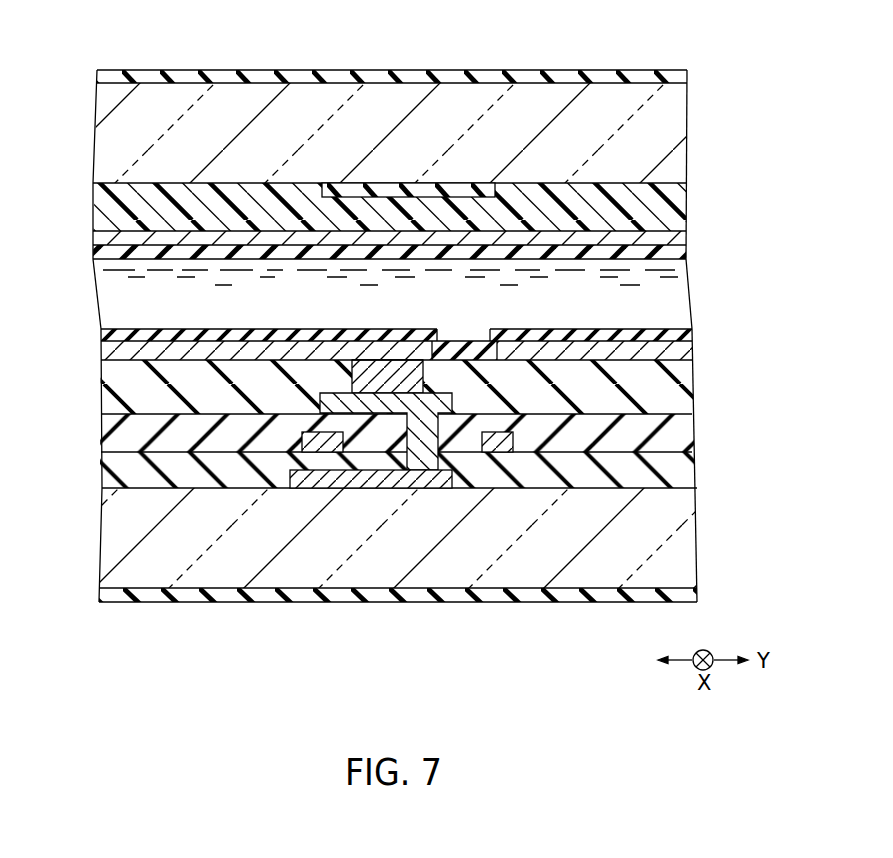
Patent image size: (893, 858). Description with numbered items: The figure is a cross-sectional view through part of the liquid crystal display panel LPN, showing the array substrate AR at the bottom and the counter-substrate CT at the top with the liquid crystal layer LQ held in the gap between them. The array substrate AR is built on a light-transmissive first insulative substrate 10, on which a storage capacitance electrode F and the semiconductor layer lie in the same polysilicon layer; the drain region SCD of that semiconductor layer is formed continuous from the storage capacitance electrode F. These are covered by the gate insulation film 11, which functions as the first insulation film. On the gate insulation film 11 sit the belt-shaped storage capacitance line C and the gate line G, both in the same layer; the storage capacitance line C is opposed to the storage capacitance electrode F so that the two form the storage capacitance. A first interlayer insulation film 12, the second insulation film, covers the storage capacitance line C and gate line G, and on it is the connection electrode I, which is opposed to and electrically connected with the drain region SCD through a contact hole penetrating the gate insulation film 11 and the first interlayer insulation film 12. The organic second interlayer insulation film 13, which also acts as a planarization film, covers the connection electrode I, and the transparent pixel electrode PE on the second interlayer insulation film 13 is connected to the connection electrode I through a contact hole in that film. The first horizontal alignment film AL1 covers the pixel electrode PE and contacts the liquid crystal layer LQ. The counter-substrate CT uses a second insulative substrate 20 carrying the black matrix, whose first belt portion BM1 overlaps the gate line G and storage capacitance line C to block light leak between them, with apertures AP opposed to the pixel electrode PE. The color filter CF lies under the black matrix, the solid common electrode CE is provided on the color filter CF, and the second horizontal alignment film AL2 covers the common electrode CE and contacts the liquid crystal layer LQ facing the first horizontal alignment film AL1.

The liquid crystal display panel LPN is at (704, 77).
The counter-substrate CT is at (82, 127).
The array substrate AR is at (78, 533).
The second insulative substrate 20 is at (680, 143).
The color filter CF is at (692, 211).
The aperture AP is at (313, 185).
The first belt portion BM1 is at (408, 183).
The common electrode CE is at (682, 237).
The second horizontal alignment film AL2 is at (682, 255).
The liquid crystal layer LQ is at (677, 295).
The first horizontal alignment film AL1 is at (698, 333).
The pixel electrode PE is at (100, 350).
The second interlayer insulation film 13 is at (688, 388).
The first interlayer insulation film 12 is at (695, 438).
The gate insulation film 11 is at (690, 472).
The first insulative substrate 10 is at (685, 550).
The drain region SCD is at (412, 470).
The connection electrode I is at (423, 470).
The storage capacitance electrode F is at (343, 488).
The storage capacitance line C is at (310, 452).
The gate line G is at (494, 452).